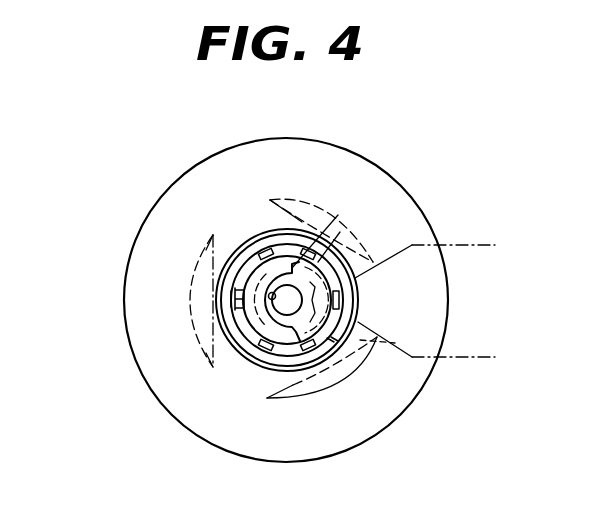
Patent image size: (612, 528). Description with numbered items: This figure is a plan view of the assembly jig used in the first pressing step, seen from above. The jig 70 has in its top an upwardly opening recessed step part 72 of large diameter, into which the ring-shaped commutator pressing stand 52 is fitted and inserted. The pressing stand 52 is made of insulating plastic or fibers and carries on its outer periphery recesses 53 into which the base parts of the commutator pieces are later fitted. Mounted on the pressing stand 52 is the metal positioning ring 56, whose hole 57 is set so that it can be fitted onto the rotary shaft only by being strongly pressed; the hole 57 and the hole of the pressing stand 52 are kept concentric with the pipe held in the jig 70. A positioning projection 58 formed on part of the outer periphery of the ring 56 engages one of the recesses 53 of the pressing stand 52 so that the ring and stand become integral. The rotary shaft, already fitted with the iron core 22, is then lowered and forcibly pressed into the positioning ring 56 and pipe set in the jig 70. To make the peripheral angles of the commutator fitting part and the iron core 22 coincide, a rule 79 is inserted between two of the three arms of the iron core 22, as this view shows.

The iron core 22 is at (338, 215).
The commutator pressing stand 52 is at (278, 350).
The recesses 53 is at (235, 292).
The positioning ring 56 is at (238, 337).
The hole 57 is at (269, 293).
The positioning projection 58 is at (232, 306).
The jig 70 is at (133, 310).
The recessed step part 72 is at (350, 338).
The rule 79 is at (475, 245).